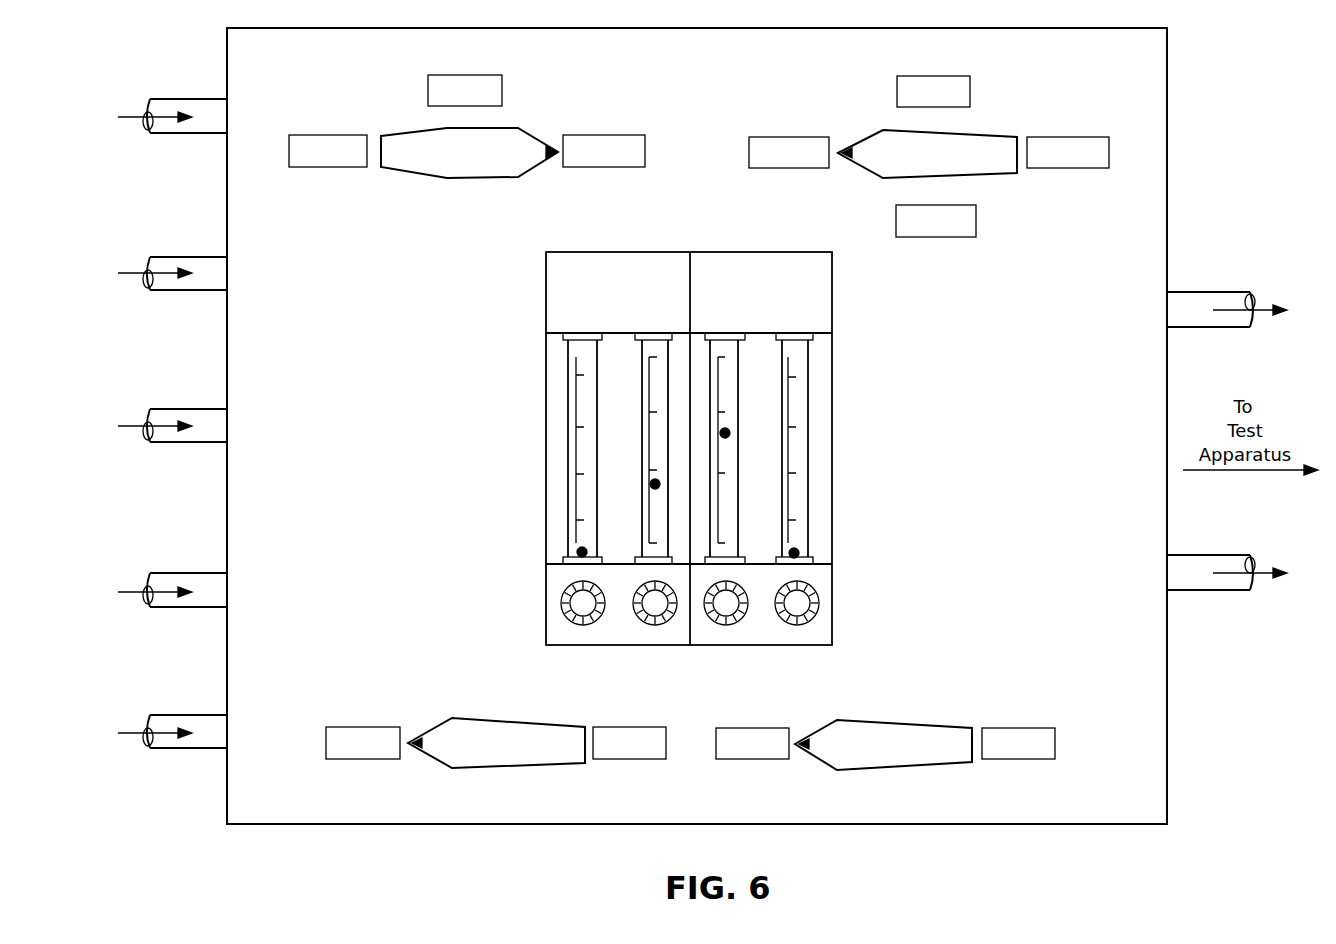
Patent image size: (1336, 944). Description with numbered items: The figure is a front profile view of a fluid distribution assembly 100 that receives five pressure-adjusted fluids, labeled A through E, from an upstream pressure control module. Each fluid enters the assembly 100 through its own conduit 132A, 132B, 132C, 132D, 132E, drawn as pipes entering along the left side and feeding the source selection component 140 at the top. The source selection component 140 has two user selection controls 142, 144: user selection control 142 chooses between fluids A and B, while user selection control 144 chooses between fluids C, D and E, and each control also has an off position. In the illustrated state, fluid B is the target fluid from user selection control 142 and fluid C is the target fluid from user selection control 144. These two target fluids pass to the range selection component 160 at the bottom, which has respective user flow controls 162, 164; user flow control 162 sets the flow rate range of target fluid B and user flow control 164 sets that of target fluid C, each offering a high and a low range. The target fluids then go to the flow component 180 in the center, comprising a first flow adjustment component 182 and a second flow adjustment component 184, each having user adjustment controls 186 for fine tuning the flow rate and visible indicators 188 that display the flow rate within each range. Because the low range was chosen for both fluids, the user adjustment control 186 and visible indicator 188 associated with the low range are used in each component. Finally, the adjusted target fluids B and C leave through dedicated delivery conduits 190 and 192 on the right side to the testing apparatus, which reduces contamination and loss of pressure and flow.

The fluid distribution assembly 100 is at (190, 44).
The conduit 132A is at (211, 136).
The conduit 132B is at (211, 293).
The conduit 132C is at (211, 445).
The conduit 132D is at (211, 610).
The conduit 132E is at (211, 751).
The source selection component 140 is at (756, 81).
The user selection control 142 is at (419, 180).
The user selection control 144 is at (998, 175).
The range selection component 160 is at (750, 800).
The user flow control 162 is at (438, 720).
The user flow control 164 is at (935, 722).
The flow component 180 is at (492, 362).
The first flow adjustment component 182 is at (563, 291).
The second flow adjustment component 184 is at (822, 282).
The user adjustment control 186 is at (562, 590).
The visible indicator 188 is at (641, 508).
The delivery conduit 190 is at (1190, 292).
The delivery conduit 192 is at (1193, 555).